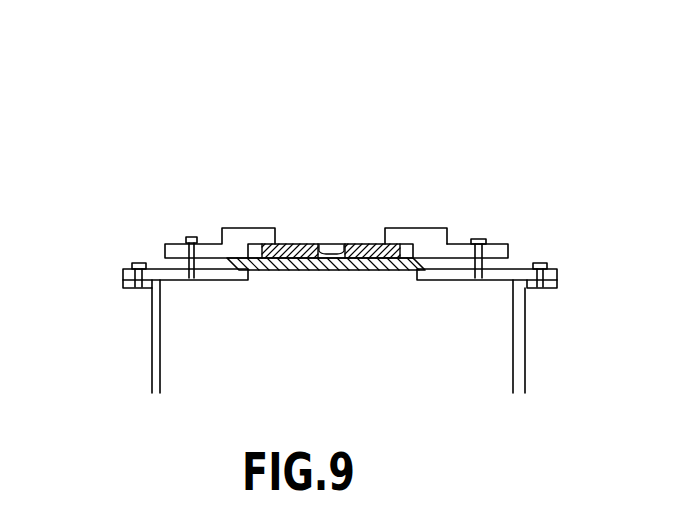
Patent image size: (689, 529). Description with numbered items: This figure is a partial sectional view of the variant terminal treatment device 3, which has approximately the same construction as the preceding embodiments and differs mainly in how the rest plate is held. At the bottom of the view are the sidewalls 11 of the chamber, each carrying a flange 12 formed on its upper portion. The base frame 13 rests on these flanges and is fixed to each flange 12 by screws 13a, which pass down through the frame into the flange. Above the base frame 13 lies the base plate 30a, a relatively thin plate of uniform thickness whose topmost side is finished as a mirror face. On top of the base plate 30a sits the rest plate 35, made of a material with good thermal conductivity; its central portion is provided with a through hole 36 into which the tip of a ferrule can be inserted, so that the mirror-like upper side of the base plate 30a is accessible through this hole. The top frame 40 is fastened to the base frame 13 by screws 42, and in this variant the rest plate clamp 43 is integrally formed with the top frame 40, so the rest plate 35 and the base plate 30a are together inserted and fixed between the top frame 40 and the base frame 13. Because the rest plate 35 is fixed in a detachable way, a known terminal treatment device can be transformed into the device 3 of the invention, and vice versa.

The terminal treatment device 3 is at (470, 197).
The sidewalls 11 is at (153, 367).
The flange 12 is at (127, 290).
The base frame 13 is at (434, 280).
The screws 13a is at (140, 262).
The base plate 30a is at (285, 270).
The rest plate 35 is at (360, 244).
The through hole 36 is at (325, 244).
The top frame 40 is at (503, 243).
The screws 42 is at (192, 237).
The rest plate clamp 43 is at (272, 228).